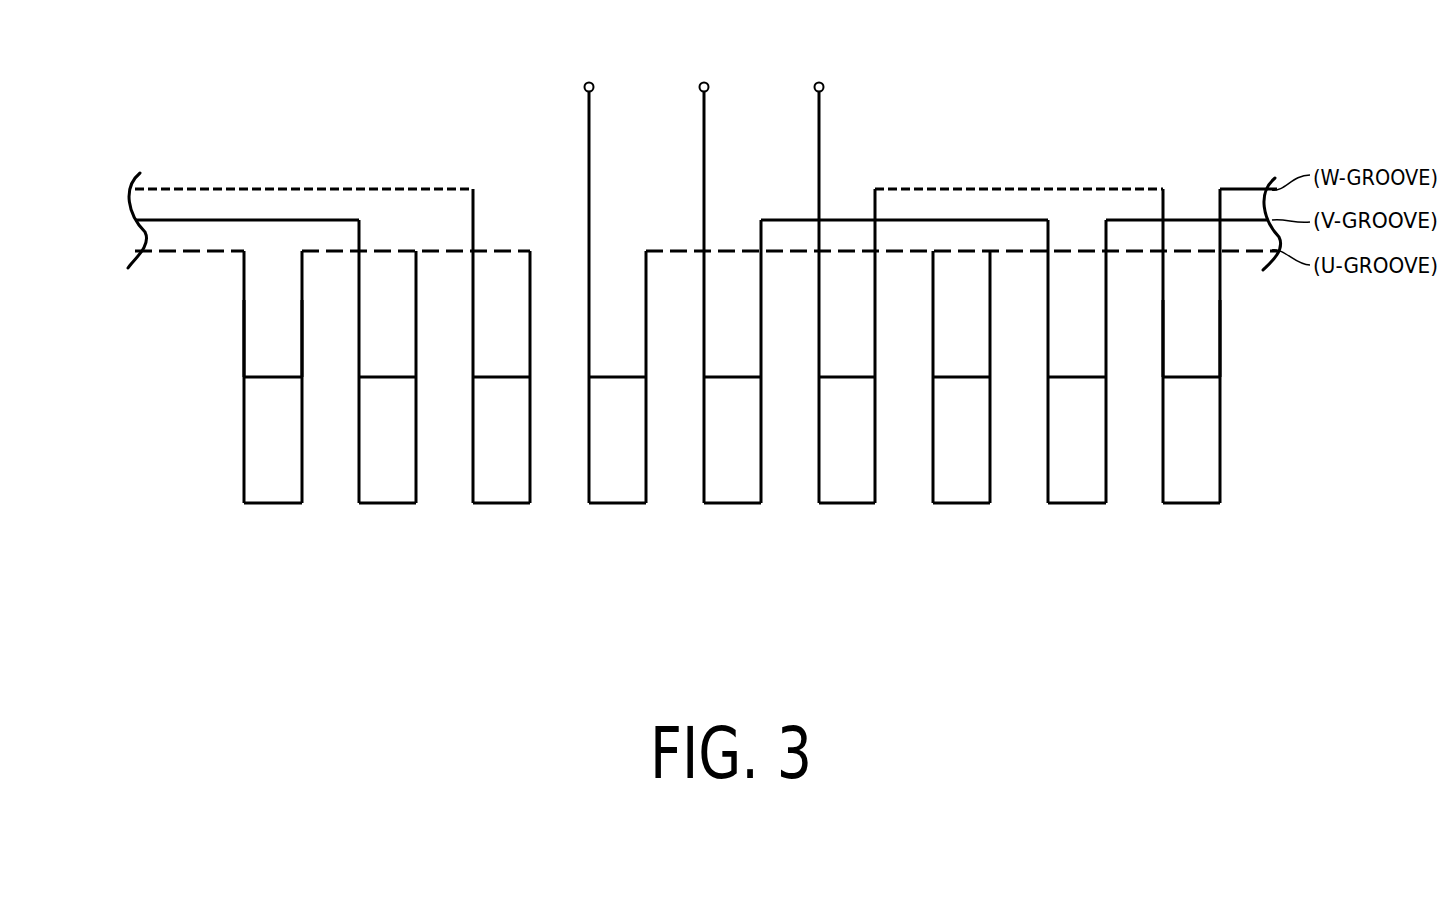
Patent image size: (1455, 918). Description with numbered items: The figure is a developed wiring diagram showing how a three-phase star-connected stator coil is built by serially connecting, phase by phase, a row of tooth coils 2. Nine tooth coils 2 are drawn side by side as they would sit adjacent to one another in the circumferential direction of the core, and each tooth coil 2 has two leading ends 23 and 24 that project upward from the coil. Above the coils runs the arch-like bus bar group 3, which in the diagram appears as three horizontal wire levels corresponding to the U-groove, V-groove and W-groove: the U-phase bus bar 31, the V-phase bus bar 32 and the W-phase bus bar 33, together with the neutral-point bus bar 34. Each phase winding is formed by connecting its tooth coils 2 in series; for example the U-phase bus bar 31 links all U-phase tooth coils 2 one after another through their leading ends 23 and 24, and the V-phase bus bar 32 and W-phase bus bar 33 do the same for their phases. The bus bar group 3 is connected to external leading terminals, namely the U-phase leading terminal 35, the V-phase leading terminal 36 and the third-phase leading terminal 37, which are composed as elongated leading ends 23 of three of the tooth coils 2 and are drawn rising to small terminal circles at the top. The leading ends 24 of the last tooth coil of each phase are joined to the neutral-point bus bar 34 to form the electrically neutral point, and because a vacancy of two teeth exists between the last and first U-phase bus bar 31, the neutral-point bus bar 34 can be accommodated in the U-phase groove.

The tooth coil 2 is at (290, 481).
The bus bar group 3 is at (254, 151).
The leading end 23 is at (244, 328).
The leading end 24 is at (302, 328).
The U-phase bus bar 31 is at (188, 250).
The V-phase bus bar 32 is at (321, 219).
The W-phase bus bar 33 is at (418, 188).
The neutral-point bus bar 34 is at (503, 250).
The U-phase leading terminal 35 is at (589, 113).
The V-phase leading terminal 36 is at (704, 113).
The W-phase leading terminal 37 is at (819, 113).